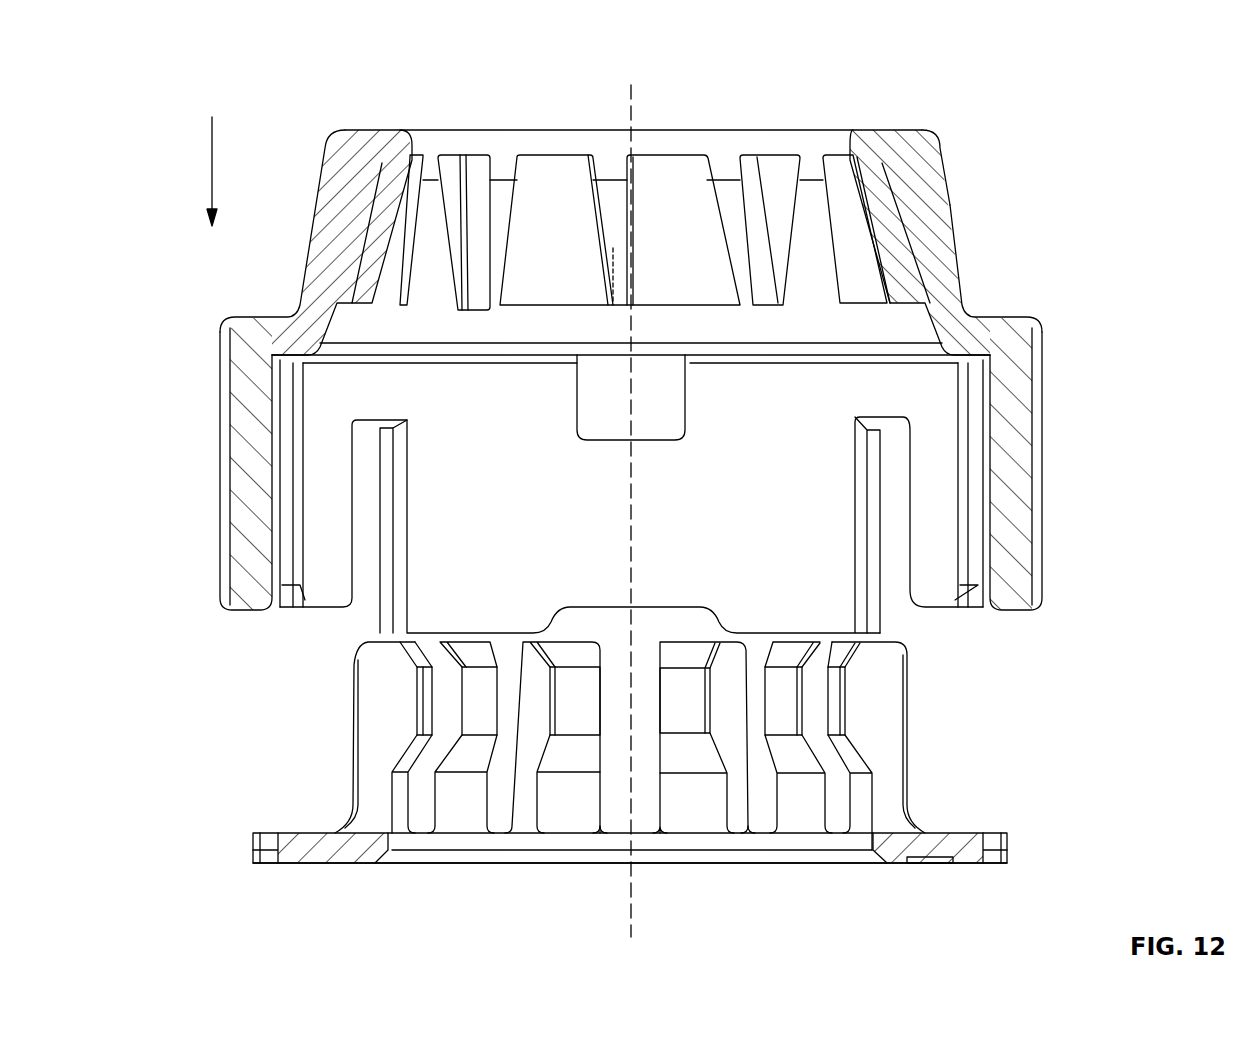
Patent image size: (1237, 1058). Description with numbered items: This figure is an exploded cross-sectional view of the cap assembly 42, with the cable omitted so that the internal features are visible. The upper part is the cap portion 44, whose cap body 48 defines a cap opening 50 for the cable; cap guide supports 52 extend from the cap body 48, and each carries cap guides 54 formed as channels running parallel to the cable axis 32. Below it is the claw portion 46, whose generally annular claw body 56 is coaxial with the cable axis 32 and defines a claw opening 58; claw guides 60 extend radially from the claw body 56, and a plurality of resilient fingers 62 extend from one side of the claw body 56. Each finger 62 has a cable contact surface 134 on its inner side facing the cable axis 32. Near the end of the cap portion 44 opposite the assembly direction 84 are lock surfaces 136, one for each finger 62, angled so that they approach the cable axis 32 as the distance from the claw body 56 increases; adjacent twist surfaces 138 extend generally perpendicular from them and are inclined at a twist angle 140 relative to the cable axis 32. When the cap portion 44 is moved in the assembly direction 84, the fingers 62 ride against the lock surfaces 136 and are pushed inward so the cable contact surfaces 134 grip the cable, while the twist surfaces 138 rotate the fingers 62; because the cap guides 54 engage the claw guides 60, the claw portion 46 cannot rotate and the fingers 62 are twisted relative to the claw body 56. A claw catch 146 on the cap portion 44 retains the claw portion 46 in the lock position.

The cable axis 32 is at (634, 898).
The cap assembly 42 is at (1008, 71).
The cap portion 44 is at (945, 248).
The claw portion 46 is at (950, 833).
The cap body 48 is at (941, 158).
The cap opening 50 is at (842, 130).
The cap guide supports 52 is at (218, 480).
The cap guides 54 is at (290, 610).
The claw body 56 is at (928, 863).
The claw opening 58 is at (830, 857).
The claw guides 60 is at (267, 852).
The resilient fingers 62 is at (897, 745).
The assembly direction 84 is at (212, 143).
The cable contact surface 134 is at (838, 683).
The lock surfaces 136 is at (573, 227).
The twist surfaces 138 is at (473, 260).
The twist angle 140 is at (618, 256).
The claw catch 146 is at (658, 442).